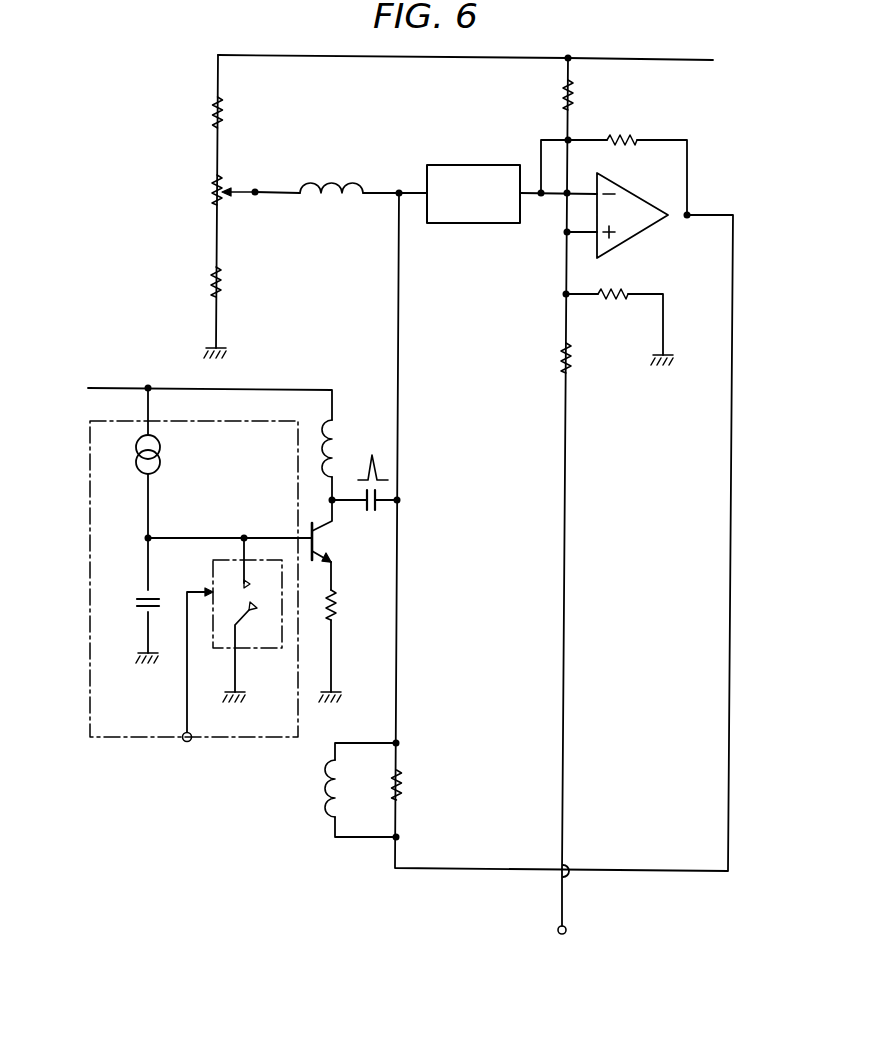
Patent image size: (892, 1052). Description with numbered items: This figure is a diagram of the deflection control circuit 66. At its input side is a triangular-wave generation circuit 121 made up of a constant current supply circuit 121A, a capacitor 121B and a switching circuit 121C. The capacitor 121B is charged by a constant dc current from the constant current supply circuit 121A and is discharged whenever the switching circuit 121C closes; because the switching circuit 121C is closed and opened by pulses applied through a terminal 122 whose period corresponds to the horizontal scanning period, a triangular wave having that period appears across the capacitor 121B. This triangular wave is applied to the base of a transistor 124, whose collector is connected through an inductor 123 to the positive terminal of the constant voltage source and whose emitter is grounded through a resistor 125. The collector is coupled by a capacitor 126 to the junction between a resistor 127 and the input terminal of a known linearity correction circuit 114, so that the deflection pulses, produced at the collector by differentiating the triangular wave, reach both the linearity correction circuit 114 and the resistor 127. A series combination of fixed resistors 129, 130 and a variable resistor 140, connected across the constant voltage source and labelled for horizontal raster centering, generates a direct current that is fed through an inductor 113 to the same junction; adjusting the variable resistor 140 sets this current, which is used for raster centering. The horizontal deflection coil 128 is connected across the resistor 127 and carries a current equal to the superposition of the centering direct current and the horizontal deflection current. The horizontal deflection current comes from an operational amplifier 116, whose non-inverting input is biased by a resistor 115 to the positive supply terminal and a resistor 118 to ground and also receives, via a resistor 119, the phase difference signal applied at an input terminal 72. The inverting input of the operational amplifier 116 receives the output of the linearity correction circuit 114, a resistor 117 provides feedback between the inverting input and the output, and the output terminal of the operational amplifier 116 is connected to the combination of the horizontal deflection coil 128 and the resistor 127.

The deflection control circuit 66 is at (165, 77).
The input terminal 72 is at (567, 932).
The inductor 113 is at (333, 182).
The linearity correction circuit 114 is at (457, 164).
The resistor 115 is at (573, 96).
The operational amplifier 116 is at (639, 196).
The resistor 117 is at (624, 136).
The resistor 118 is at (614, 298).
The resistor 119 is at (572, 370).
The triangular-wave generation circuit 121 is at (113, 740).
The constant current supply circuit 121A is at (161, 447).
The capacitor 121B is at (137, 603).
The switching circuit 121C is at (250, 650).
The terminal 122 is at (187, 743).
The inductor 123 is at (342, 424).
The transistor 124 is at (324, 550).
The resistor 125 is at (335, 610).
The capacitor 126 is at (372, 511).
The resistor 127 is at (402, 790).
The horizontal deflection coil 128 is at (325, 790).
The fixed resistor 129 is at (222, 113).
The fixed resistor 130 is at (222, 285).
The variable resistor 140 is at (210, 190).